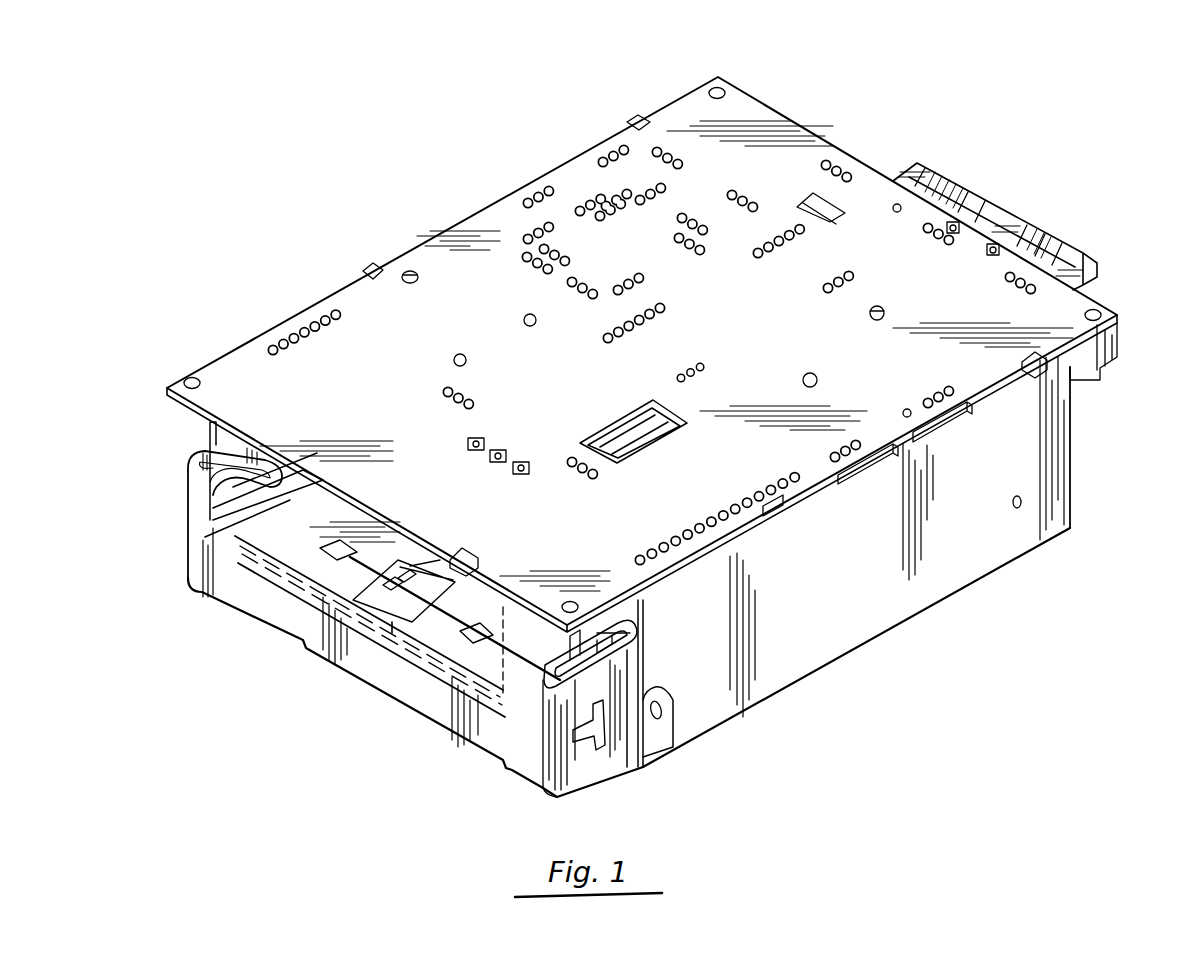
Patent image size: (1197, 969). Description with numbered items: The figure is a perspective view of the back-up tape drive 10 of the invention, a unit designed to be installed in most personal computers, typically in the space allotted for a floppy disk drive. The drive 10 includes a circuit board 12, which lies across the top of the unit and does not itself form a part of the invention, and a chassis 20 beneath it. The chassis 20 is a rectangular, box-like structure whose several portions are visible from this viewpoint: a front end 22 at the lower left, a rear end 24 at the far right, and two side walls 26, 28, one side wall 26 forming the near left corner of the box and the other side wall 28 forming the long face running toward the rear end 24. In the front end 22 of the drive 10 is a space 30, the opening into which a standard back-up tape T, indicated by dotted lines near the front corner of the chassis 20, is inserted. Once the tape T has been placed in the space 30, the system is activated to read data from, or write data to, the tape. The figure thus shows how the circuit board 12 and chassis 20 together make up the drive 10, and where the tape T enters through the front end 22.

The back-up tape drive 10 is at (983, 585).
The circuit board 12 is at (778, 172).
The chassis 20 is at (792, 629).
The front end 22 is at (423, 681).
The rear end 24 is at (1072, 456).
The side wall 26 is at (189, 508).
The side wall 28 is at (840, 593).
The space 30 is at (308, 528).
The back-up tape T is at (211, 441).